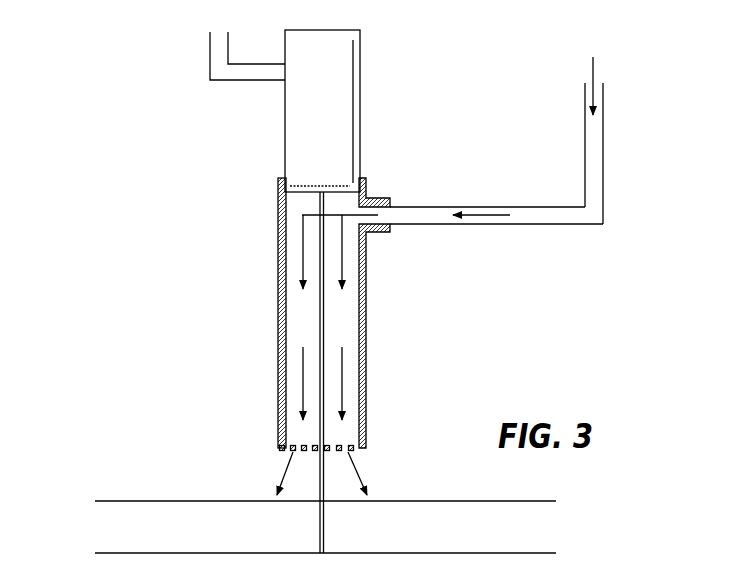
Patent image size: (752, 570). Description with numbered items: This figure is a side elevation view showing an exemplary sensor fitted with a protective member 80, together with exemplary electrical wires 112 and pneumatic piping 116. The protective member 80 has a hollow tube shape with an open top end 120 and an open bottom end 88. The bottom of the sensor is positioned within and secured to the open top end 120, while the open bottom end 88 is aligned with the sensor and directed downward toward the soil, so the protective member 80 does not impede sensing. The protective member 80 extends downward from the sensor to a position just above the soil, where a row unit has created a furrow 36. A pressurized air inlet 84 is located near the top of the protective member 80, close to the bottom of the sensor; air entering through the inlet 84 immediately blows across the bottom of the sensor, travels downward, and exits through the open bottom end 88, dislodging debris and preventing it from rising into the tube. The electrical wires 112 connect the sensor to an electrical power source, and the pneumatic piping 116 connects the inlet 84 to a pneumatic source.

The furrow 36 is at (85, 553).
The protective member 80 is at (295, 351).
The air inlet 84 is at (383, 194).
The open bottom end 88 is at (285, 453).
The electrical wires 112 is at (253, 67).
The pneumatic piping 116 is at (603, 176).
The open top end 120 is at (281, 176).